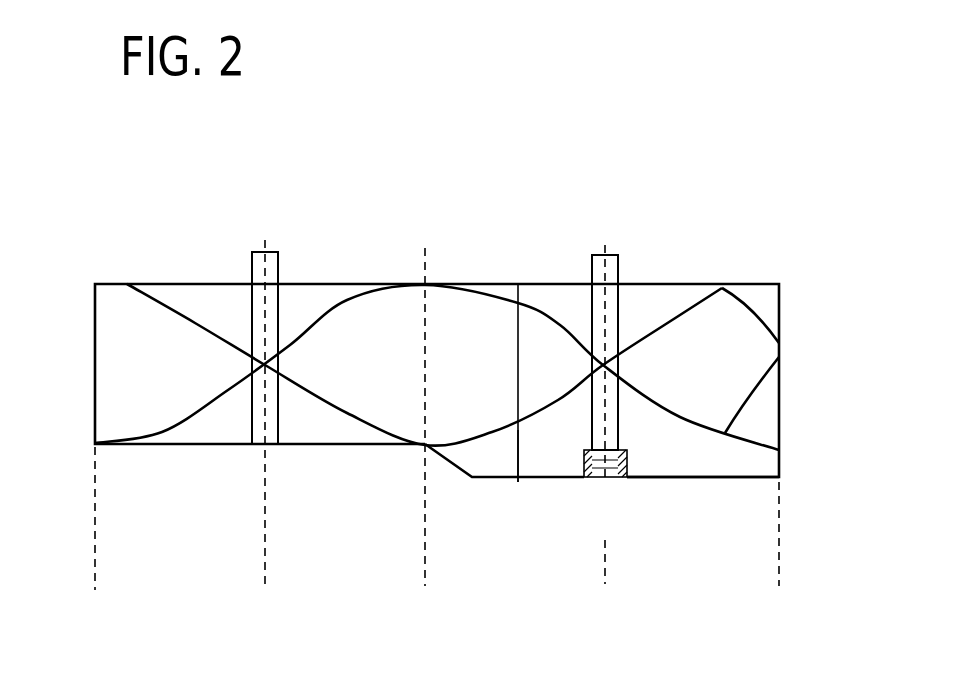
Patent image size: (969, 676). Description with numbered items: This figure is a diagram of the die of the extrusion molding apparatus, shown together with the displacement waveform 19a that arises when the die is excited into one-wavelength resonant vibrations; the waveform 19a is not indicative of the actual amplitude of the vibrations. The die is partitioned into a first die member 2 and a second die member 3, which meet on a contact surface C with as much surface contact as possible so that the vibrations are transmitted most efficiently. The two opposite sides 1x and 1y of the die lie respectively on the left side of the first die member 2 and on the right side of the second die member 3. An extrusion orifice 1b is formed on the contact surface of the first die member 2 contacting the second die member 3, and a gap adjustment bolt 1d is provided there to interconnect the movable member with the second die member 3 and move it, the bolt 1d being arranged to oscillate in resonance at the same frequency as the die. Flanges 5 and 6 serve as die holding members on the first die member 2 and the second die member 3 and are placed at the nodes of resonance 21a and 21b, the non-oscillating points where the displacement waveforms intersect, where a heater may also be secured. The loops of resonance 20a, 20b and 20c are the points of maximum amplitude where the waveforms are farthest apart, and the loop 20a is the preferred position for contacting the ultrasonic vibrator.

The side of the die 1x is at (93, 410).
The side of the die 1y is at (779, 437).
The extrusion orifice 1b is at (517, 485).
The gap adjustment bolt 1d is at (605, 478).
The first die member 2 is at (298, 437).
The second die member 3 is at (712, 479).
The flange 5 is at (268, 262).
The flange 6 is at (606, 262).
The displacement waveform 19a is at (779, 343).
The loop of resonance 20a is at (89, 535).
The loop of resonance 20b is at (423, 435).
The loop of resonance 20c is at (776, 552).
The node of resonance 21a is at (269, 431).
The node of resonance 21b is at (610, 434).
The contact surface C is at (518, 297).